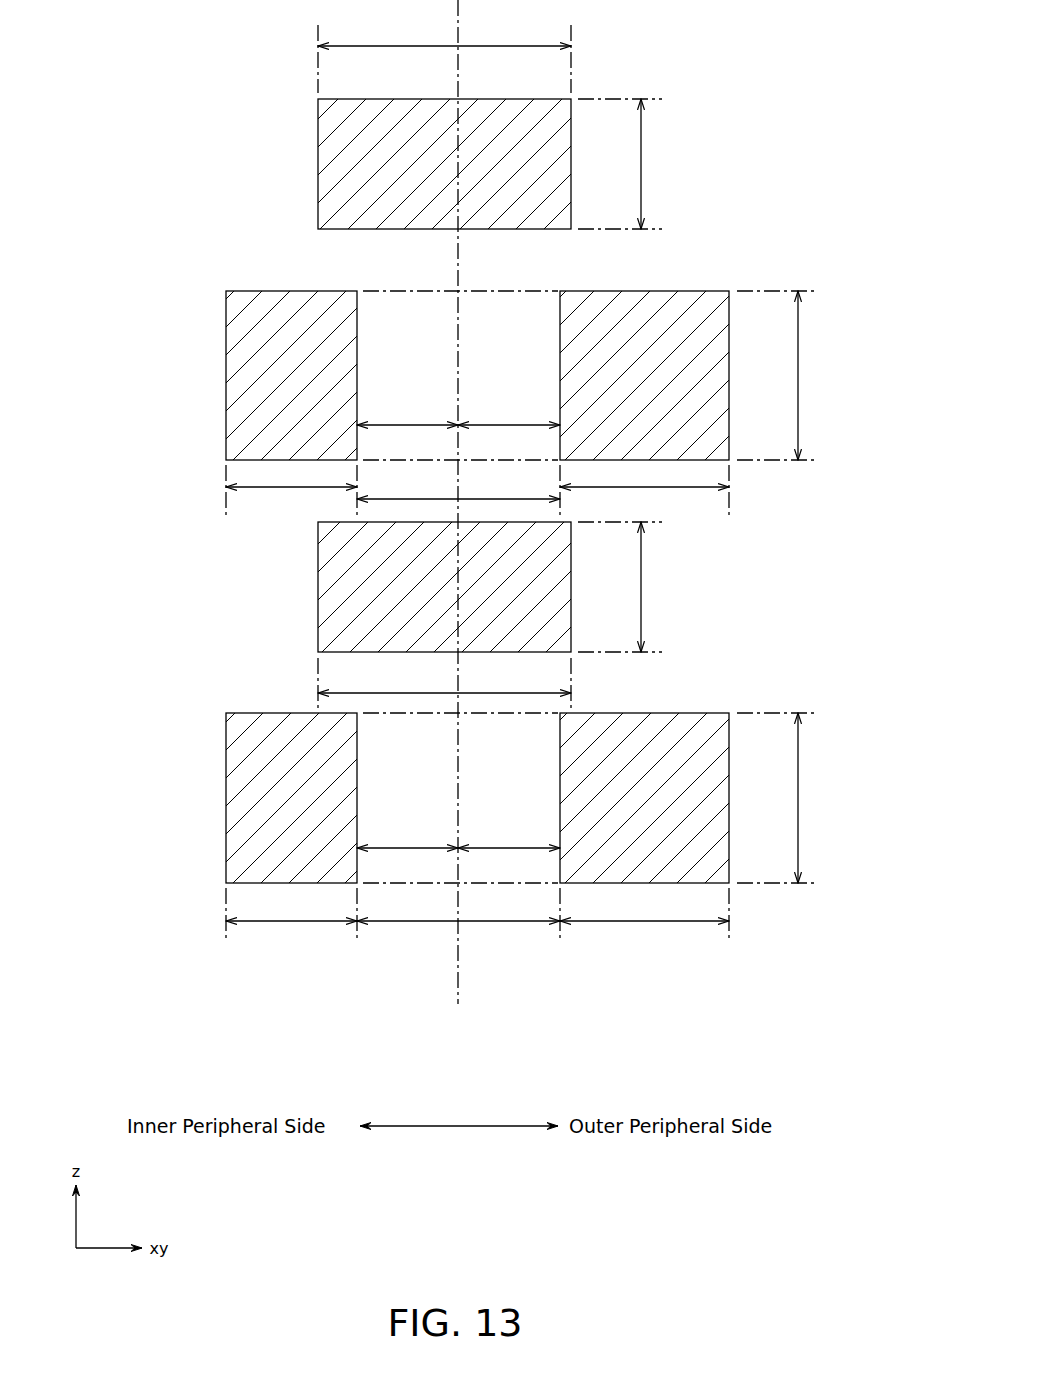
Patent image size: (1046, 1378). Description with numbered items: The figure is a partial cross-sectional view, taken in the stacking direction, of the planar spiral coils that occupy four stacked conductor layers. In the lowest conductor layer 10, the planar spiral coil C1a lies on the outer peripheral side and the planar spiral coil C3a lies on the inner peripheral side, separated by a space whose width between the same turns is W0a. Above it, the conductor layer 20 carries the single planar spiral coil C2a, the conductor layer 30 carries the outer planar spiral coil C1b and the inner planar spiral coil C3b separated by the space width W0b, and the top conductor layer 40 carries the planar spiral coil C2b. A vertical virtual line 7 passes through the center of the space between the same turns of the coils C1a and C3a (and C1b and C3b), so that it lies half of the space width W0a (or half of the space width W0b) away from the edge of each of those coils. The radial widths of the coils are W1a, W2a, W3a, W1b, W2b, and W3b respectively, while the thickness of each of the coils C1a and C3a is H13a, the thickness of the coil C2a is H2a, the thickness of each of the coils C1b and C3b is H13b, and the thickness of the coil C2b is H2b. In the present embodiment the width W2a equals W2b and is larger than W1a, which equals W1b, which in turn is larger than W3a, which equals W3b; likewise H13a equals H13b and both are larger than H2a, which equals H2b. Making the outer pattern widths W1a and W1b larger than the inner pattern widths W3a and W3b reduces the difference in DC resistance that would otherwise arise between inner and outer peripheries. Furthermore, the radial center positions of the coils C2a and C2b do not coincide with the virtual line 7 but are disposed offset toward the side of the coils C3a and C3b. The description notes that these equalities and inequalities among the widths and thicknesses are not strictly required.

The virtual line 7 is at (459, 972).
The conductor layer 10 is at (150, 794).
The conductor layer 20 is at (150, 608).
The conductor layer 30 is at (150, 368).
The conductor layer 40 is at (150, 141).
The planar spiral coil C1a is at (712, 845).
The planar spiral coil C2a is at (335, 610).
The planar spiral coil C3a is at (247, 845).
The planar spiral coil C1b is at (712, 413).
The planar spiral coil C2b is at (335, 163).
The planar spiral coil C3b is at (247, 405).
The space width W0a is at (458, 885).
The radial width W1a is at (644, 937).
The radial width W2a is at (444, 683).
The radial width W3a is at (291, 937).
The space width W0b is at (458, 446).
The radial width W1b is at (644, 502).
The radial width W2b is at (444, 55).
The radial width W3b is at (291, 502).
The thickness H2a is at (635, 587).
The thickness H2b is at (635, 164).
The thickness H13a is at (830, 798).
The thickness H13b is at (830, 375).